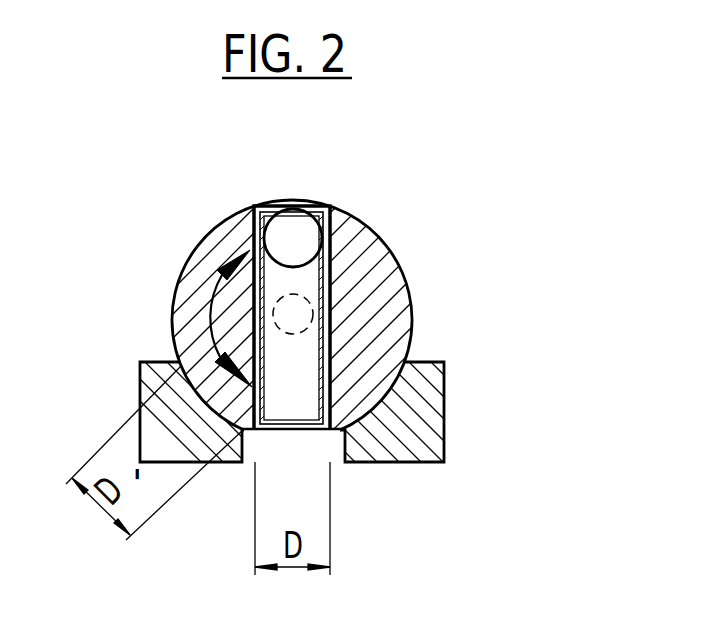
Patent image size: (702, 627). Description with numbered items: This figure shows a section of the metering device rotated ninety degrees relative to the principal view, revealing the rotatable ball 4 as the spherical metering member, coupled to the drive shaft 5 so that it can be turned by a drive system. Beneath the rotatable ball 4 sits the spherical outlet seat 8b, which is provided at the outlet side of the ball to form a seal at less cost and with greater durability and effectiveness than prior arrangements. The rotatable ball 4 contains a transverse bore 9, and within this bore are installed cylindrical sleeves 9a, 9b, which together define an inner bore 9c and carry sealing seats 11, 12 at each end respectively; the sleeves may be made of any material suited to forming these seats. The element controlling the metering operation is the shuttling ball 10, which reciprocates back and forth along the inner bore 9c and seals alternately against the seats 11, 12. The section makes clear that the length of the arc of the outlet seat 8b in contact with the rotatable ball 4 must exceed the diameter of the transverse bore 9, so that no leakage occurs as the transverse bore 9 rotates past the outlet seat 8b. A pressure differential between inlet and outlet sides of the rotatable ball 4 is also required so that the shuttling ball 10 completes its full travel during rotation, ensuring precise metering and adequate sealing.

The rotatable ball 4 is at (382, 295).
The drive shaft 5 is at (306, 296).
The spherical outlet seat 8b is at (407, 432).
The transverse bore 9 is at (257, 233).
The cylindrical sleeve 9a is at (236, 262).
The cylindrical sleeve 9b is at (258, 316).
The inner bore 9c is at (280, 368).
The shuttling ball 10 is at (284, 238).
The sealing seat 11 is at (270, 212).
The sealing seat 12 is at (322, 429).